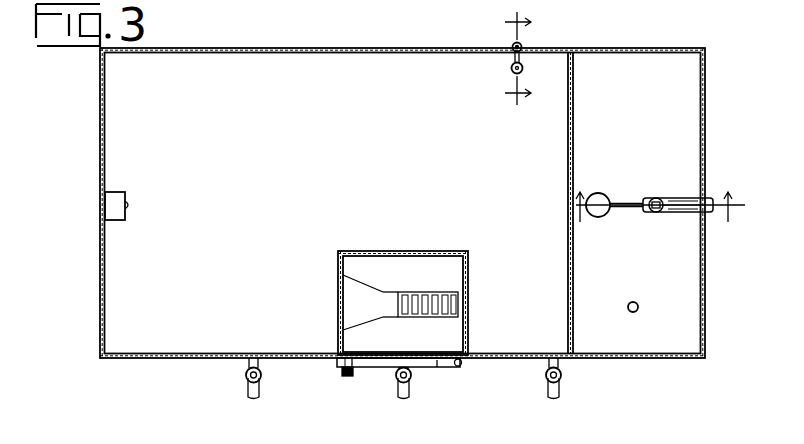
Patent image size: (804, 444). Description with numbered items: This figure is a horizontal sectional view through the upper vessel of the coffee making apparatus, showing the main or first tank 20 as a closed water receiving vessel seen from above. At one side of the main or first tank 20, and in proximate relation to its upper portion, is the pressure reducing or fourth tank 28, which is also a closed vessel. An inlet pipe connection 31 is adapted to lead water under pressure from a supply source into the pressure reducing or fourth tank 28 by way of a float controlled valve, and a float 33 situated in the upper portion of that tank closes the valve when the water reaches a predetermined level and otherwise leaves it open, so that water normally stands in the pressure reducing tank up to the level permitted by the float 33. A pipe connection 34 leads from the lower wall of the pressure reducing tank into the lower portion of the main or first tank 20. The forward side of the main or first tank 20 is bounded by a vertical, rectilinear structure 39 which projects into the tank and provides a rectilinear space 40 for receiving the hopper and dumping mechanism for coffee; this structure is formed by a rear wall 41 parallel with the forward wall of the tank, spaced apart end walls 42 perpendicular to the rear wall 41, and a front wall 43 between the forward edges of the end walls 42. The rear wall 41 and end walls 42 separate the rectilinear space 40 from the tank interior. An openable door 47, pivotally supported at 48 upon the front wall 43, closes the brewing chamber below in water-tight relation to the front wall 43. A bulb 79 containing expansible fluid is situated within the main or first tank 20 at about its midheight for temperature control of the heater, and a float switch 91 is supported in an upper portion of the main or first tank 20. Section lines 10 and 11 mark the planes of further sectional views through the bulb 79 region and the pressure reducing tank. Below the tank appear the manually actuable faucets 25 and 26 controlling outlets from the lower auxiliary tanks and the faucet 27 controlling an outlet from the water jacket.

The section line 10— 10 is at (503, 58).
The section line 11— 11 is at (659, 218).
The main or first tank 20 is at (322, 54).
The manually actuable faucet 25 is at (246, 368).
The manually actuable faucet 26 is at (561, 382).
The manually actuable faucet 27 is at (406, 395).
The pressure reducing or fourth tank 28 is at (705, 150).
The inlet pipe connection 31 is at (707, 200).
The float 33 is at (594, 194).
The pipe connection 34 is at (638, 304).
The vertical rectilinear structure 39 is at (468, 255).
The rectilinear space 40 is at (396, 265).
The rear wall 41 is at (372, 252).
The end walls 42 is at (338, 293).
The front wall 43 is at (375, 367).
The openable door 47 is at (437, 367).
The pivot 48 is at (462, 364).
The bulb 79 is at (523, 70).
The float switch 91 is at (131, 200).